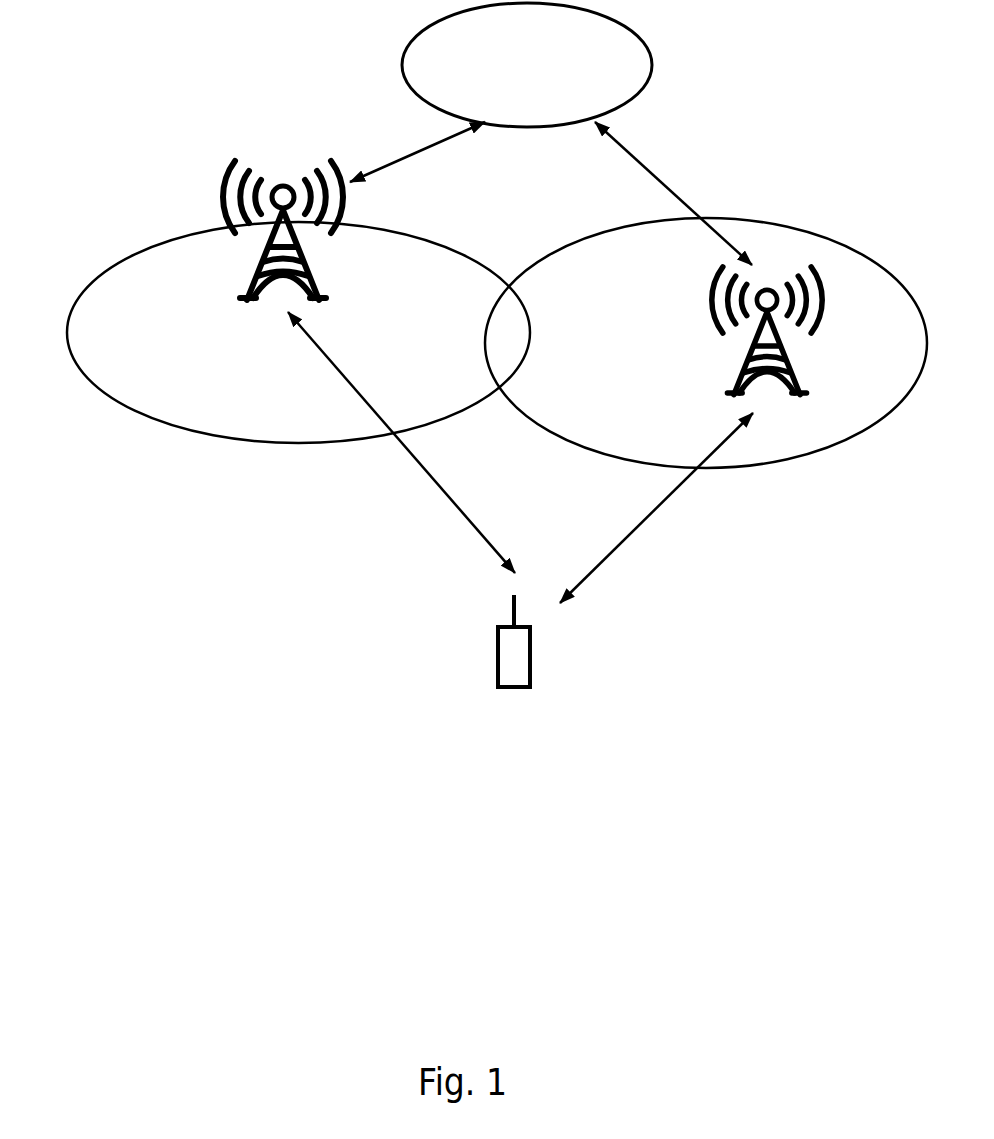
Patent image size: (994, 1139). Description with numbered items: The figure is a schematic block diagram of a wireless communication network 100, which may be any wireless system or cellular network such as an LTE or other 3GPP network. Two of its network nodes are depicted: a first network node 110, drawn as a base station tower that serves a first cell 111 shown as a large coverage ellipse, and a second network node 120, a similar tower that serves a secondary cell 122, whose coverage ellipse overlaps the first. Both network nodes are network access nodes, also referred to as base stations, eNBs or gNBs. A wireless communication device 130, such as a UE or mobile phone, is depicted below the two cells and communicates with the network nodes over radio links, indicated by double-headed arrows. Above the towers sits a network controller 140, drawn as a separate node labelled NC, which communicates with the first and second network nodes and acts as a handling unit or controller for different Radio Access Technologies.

The wireless communication network 100 is at (783, 692).
The first network node 110 is at (788, 367).
The first cell 111 is at (788, 443).
The second network node 120 is at (250, 288).
The secondary cell 122 is at (133, 280).
The wireless communication device 130 is at (513, 651).
The network controller 140 is at (527, 65).